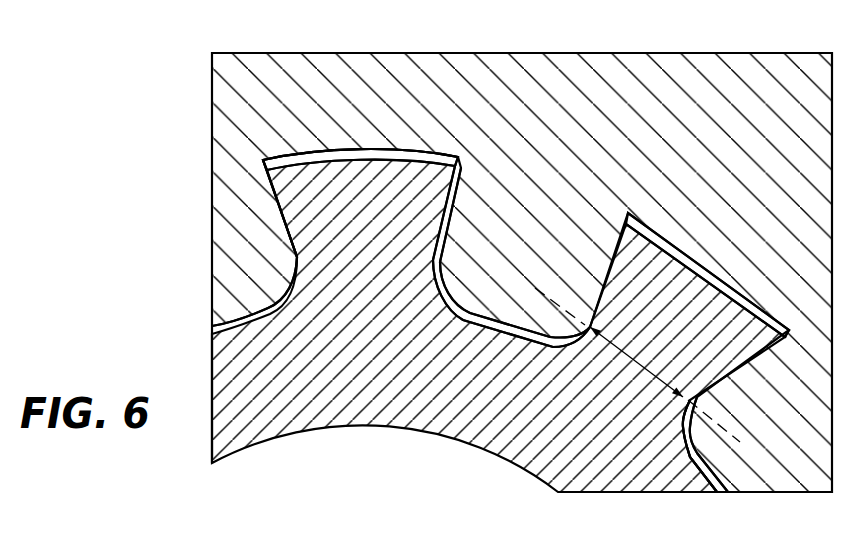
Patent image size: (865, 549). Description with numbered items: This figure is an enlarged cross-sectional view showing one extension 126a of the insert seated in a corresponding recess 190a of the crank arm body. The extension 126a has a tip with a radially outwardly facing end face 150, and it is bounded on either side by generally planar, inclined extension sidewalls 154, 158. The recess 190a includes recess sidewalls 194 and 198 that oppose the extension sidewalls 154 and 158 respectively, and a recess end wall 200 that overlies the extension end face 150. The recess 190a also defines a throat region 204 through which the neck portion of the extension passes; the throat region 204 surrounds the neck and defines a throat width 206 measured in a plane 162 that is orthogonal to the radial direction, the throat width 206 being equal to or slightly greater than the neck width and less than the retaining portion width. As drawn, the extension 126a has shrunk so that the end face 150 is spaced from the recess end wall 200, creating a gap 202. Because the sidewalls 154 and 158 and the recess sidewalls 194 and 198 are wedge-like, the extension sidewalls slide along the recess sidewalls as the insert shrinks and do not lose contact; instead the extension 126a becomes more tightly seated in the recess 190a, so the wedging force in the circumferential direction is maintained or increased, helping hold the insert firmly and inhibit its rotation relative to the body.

The extension 126a is at (388, 224).
The recess end wall 200 is at (294, 147).
The gap 202 is at (363, 150).
The recess sidewall 198 is at (458, 207).
The recess 190a is at (243, 169).
The end face 150 is at (285, 174).
The extension sidewall 154 is at (278, 231).
The recess sidewall 194 is at (287, 256).
The extension sidewall 158 is at (421, 237).
The throat region 204 is at (583, 357).
The plane 162 is at (738, 440).
The throat width 206 is at (640, 373).